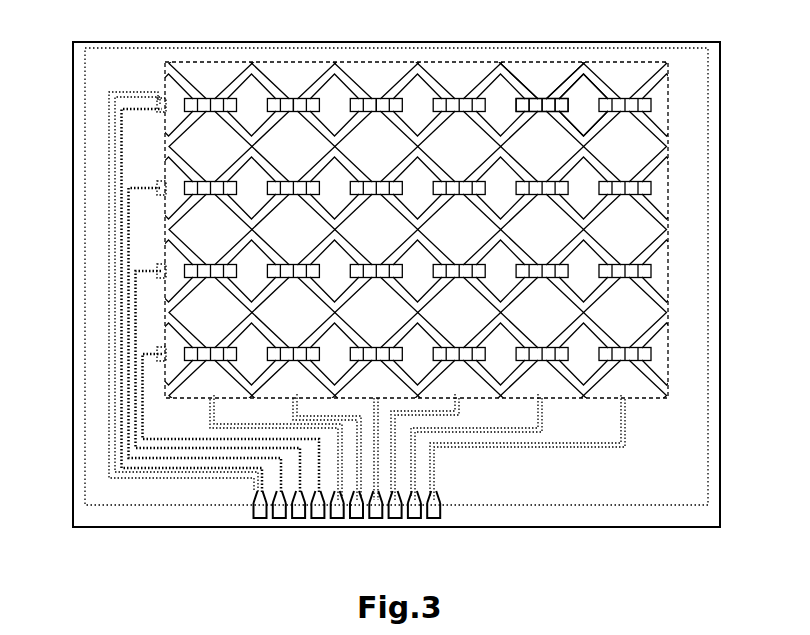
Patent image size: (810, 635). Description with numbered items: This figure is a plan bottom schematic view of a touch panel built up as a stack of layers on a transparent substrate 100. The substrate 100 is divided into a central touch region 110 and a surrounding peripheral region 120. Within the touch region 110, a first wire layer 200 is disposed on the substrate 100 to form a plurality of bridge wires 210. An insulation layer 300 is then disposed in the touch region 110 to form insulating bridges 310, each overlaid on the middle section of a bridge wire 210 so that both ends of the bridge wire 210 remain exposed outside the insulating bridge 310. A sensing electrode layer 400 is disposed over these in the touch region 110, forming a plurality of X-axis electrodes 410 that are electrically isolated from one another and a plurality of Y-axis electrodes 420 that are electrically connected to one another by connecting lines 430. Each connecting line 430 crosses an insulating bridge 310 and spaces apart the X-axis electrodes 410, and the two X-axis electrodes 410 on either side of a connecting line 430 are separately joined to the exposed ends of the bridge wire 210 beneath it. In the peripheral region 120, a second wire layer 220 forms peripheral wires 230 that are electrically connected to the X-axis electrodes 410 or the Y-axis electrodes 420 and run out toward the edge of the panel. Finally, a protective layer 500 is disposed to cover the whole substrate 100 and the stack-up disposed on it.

The transparent substrate 100 is at (150, 527).
The touch region 110 is at (675, 147).
The peripheral region 120 is at (100, 252).
The first wire layer 200 is at (658, 105).
The bridge wire 210 is at (258, 92).
The second wire layer 220 is at (108, 131).
The peripheral wire 230 is at (152, 182).
The insulation layer 300 is at (672, 64).
The insulating bridge 310 is at (322, 88).
The sensing electrode layer 400 is at (631, 60).
The X-axis electrode 410 is at (580, 82).
The Y-axis electrode 420 is at (542, 72).
The connecting line 430 is at (530, 93).
The protective layer 500 is at (538, 510).